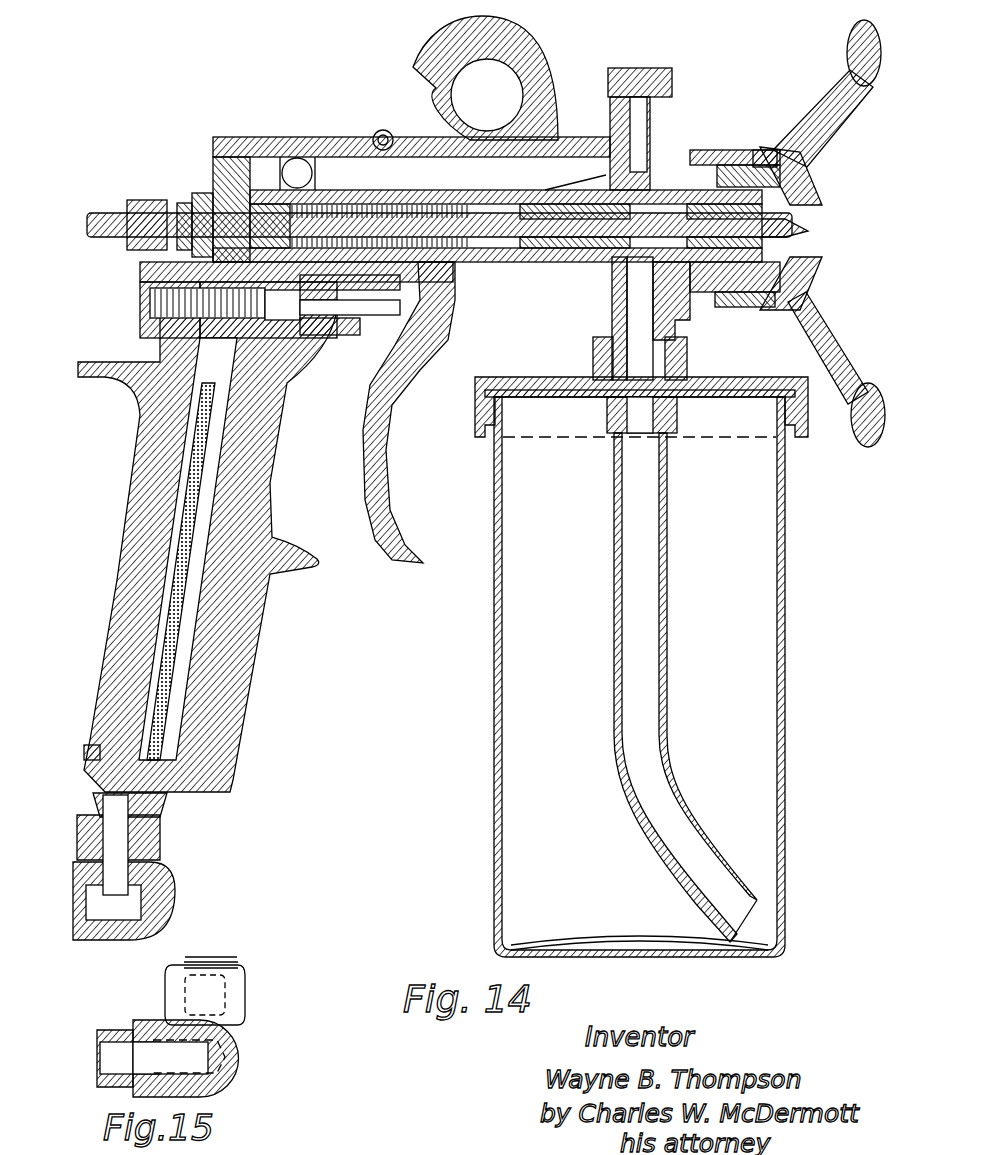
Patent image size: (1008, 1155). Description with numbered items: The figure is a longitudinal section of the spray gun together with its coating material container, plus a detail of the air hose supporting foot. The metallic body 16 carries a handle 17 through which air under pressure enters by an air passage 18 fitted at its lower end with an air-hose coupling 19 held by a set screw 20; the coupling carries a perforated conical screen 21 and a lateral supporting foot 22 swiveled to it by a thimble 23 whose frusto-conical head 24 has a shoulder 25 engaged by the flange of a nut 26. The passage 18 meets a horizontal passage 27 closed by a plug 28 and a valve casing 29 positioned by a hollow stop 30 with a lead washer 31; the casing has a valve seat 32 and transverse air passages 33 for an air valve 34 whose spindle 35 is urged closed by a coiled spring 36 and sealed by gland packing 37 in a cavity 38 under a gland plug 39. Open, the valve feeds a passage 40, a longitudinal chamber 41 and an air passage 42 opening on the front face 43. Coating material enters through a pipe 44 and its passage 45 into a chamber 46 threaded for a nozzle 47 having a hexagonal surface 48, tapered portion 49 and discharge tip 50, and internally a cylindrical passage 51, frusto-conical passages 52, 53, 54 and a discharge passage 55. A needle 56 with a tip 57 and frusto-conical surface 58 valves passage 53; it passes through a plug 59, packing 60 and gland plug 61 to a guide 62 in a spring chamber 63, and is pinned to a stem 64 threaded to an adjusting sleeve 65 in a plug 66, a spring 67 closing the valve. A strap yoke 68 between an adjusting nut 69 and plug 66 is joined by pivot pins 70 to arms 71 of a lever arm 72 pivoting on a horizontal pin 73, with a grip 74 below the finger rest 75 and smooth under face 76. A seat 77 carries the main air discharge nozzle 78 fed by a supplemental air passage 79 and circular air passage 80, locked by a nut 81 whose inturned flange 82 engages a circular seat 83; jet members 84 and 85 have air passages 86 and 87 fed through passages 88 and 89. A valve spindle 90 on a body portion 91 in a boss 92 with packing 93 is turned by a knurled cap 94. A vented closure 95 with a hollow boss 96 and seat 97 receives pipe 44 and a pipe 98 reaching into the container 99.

In FIG. 14, the body 16 is at (225, 145).
In FIG. 14, the handle 17 is at (262, 640).
In FIG. 14, the air passage 18 is at (225, 414).
In FIG. 14, the air-hose coupling 19 is at (173, 790).
In FIG. 14, the set screw 20 is at (88, 745).
In FIG. 14, the perforated conical screen 21 is at (178, 655).
In FIG. 14, the supporting foot 22 is at (127, 890).
In FIG. 15, the supporting foot 22 is at (143, 1040).
In FIG. 14, the thimble 23 is at (158, 856).
In FIG. 15, the thimble 23 is at (175, 1040).
In FIG. 15, the frusto-conical head 24 is at (235, 992).
In FIG. 14, the shoulder 25 is at (150, 885).
In FIG. 14, the nut 26 is at (160, 832).
In FIG. 15, the nut 26 is at (168, 975).
In FIG. 14, the horizontal passage 27 is at (202, 347).
In FIG. 14, the plug 28 is at (142, 315).
In FIG. 14, the valve casing 29 is at (370, 275).
In FIG. 14, the hollow stop 30 is at (272, 335).
In FIG. 14, the lead washer 31 is at (305, 330).
In FIG. 14, the valve seat 32 is at (322, 330).
In FIG. 14, the transverse air passages 33 is at (365, 284).
In FIG. 14, the air valve 34 is at (267, 330).
In FIG. 14, the spindle 35 is at (392, 306).
In FIG. 14, the coiled spring 36 is at (150, 298).
In FIG. 14, the gland packing 37 is at (360, 316).
In FIG. 14, the cavity 38 is at (346, 332).
In FIG. 14, the gland plug 39 is at (366, 326).
In FIG. 14, the passage 40 is at (280, 140).
In FIG. 14, the longitudinal chamber 41 is at (463, 180).
In FIG. 14, the air passage 42 is at (596, 188).
In FIG. 14, the front face 43 is at (748, 285).
In FIG. 14, the pipe 44 is at (680, 315).
In FIG. 14, the passage 45 is at (640, 305).
In FIG. 14, the chamber 46 is at (620, 280).
In FIG. 14, the nozzle 47 is at (770, 300).
In FIG. 14, the hexagonal surface 48 is at (790, 185).
In FIG. 14, the tapered portion 49 is at (790, 210).
In FIG. 14, the discharge tip 50 is at (805, 228).
In FIG. 14, the cylindrical passage 51 is at (800, 285).
In FIG. 14, the frusto-conical passage 52 is at (800, 270).
In FIG. 14, the second frusto-conical passage 53 is at (808, 246).
In FIG. 14, the third frusto-conical passage 54 is at (810, 240).
In FIG. 14, the cylindrical discharge passage 55 is at (812, 236).
In FIG. 14, the needle 56 is at (632, 262).
In FIG. 14, the tip 57 is at (812, 233).
In FIG. 14, the frusto-conical surface 58 is at (812, 232).
In FIG. 14, the plug 59 is at (533, 258).
In FIG. 14, the packing 60 is at (538, 265).
In FIG. 14, the gland plug 61 is at (530, 250).
In FIG. 14, the guide 62 is at (441, 205).
In FIG. 14, the spring chamber 63 is at (450, 270).
In FIG. 14, the stem 64 is at (245, 175).
In FIG. 14, the adjusting sleeve 65 is at (200, 200).
In FIG. 14, the plug 66 is at (185, 205).
In FIG. 14, the spring 67 is at (297, 168).
In FIG. 14, the strap yoke 68 is at (160, 210).
In FIG. 14, the adjusting nut 69 is at (125, 212).
In FIG. 14, the pivot pins 70 is at (408, 186).
In FIG. 14, the arms 71 is at (447, 322).
In FIG. 14, the lever arm 72 is at (430, 366).
In FIG. 14, the horizontal pin 73 is at (376, 128).
In FIG. 14, the grip 74 is at (386, 492).
In FIG. 14, the finger rest 75 is at (310, 572).
In FIG. 14, the under face 76 is at (105, 378).
In FIG. 14, the seat 77 is at (722, 300).
In FIG. 14, the main air discharge nozzle 78 is at (800, 165).
In FIG. 14, the supplemental air passage 79 is at (676, 170).
In FIG. 14, the circular air passage 80 is at (720, 175).
In FIG. 14, the nut 81 is at (700, 150).
In FIG. 14, the inturned flange 82 is at (728, 165).
In FIG. 14, the circular seat 83 is at (738, 290).
In FIG. 14, the jet member 84 is at (805, 222).
In FIG. 14, the jet member 85 is at (805, 260).
In FIG. 14, the air passage 86 is at (795, 200).
In FIG. 14, the air passage 87 is at (810, 310).
In FIG. 14, the passage 88 is at (745, 165).
In FIG. 14, the passage 89 is at (752, 307).
In FIG. 14, the valve spindle 90 is at (612, 170).
In FIG. 14, the body portion 91 is at (630, 110).
In FIG. 14, the boss 92 is at (606, 140).
In FIG. 14, the packing 93 is at (613, 128).
In FIG. 14, the knurled cap 94 is at (640, 68).
In FIG. 14, the vented closure 95 is at (478, 385).
In FIG. 14, the hollow boss 96 is at (593, 350).
In FIG. 14, the seat 97 is at (596, 340).
In FIG. 14, the pipe 98 is at (668, 440).
In FIG. 14, the container 99 is at (785, 505).